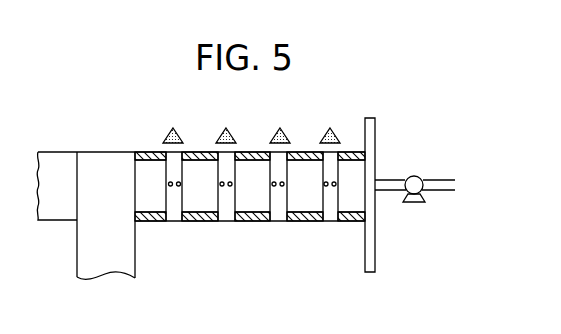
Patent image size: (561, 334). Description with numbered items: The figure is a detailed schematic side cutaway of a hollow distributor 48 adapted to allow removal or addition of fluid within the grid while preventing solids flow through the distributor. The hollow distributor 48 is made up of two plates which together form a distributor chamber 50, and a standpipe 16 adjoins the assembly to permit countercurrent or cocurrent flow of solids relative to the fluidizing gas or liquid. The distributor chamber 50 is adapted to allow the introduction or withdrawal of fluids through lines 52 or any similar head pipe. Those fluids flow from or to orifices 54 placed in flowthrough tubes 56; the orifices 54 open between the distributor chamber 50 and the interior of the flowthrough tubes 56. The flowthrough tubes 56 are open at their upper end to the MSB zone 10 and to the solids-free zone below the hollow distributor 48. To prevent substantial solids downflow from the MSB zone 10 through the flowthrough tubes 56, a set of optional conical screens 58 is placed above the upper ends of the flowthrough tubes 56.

The MSB zone 10 is at (209, 103).
The standpipe 16 is at (137, 248).
The hollow distributor 48 is at (115, 128).
The distributor chamber 50 is at (158, 193).
The lines 52 is at (390, 180).
The orifices 54 is at (178, 181).
The flowthrough tubes 56 is at (182, 204).
The conical screens 58 is at (329, 128).